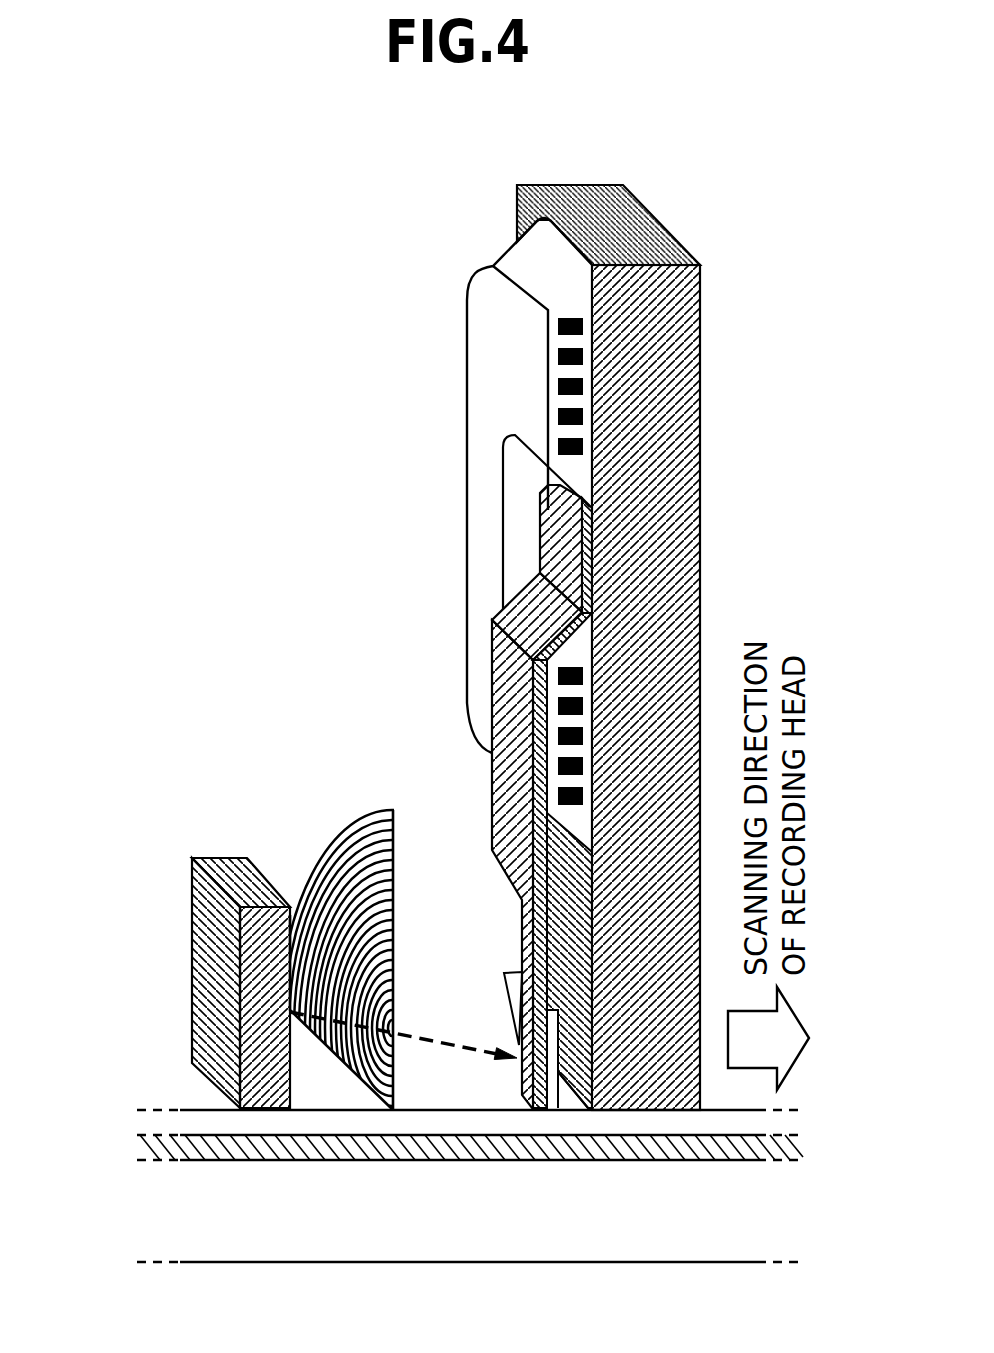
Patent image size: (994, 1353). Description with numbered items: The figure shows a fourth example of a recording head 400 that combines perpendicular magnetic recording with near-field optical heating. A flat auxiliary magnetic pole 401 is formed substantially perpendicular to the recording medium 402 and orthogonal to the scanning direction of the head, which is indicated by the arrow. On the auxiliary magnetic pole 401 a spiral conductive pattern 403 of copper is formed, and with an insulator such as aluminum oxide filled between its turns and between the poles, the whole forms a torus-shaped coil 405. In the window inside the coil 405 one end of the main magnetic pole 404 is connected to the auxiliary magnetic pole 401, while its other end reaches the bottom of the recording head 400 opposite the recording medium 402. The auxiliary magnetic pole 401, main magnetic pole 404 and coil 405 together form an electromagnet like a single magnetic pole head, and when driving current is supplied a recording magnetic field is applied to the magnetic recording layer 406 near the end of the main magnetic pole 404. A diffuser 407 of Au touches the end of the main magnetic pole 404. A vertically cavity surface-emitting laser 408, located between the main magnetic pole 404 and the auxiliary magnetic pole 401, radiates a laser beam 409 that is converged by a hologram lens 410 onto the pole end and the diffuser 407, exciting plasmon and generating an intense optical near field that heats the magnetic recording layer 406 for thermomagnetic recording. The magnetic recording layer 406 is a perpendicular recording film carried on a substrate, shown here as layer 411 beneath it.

The recording head 400 is at (822, 257).
The auxiliary magnetic pole 401 is at (680, 578).
The recording medium 402 is at (822, 1140).
The conductive pattern 403 is at (557, 413).
The main magnetic pole 404 is at (503, 772).
The coil 405 is at (495, 347).
The magnetic recording layer 406 is at (155, 1152).
The diffuser 407 is at (550, 1088).
The vertically cavity surface-emitting laser 408 is at (252, 862).
The laser beam 409 is at (440, 1000).
The hologram lens 410 is at (335, 887).
The base material 411 is at (157, 1207).